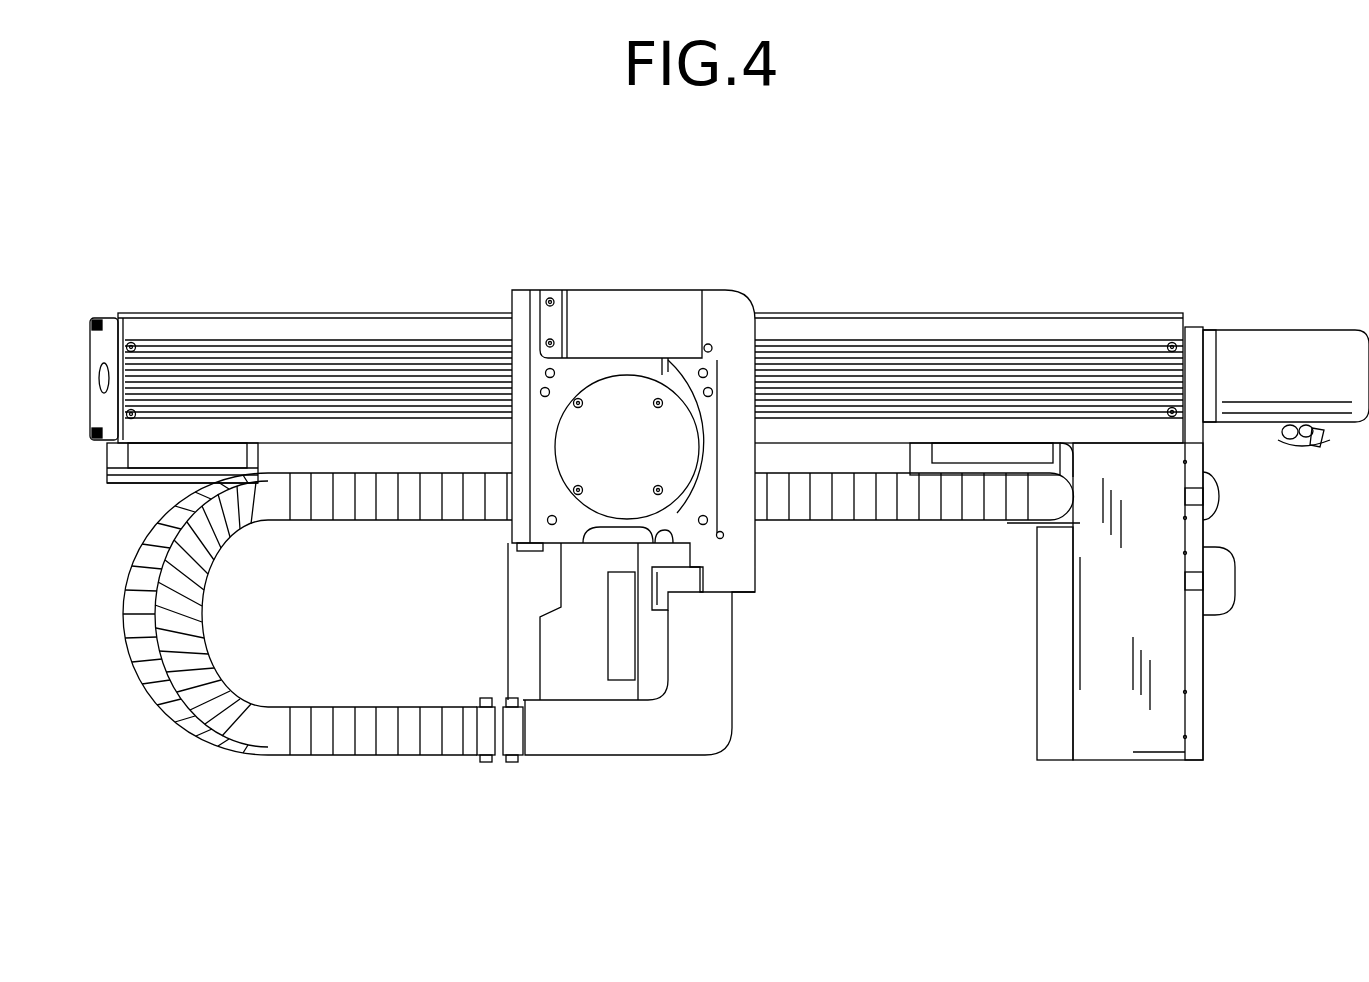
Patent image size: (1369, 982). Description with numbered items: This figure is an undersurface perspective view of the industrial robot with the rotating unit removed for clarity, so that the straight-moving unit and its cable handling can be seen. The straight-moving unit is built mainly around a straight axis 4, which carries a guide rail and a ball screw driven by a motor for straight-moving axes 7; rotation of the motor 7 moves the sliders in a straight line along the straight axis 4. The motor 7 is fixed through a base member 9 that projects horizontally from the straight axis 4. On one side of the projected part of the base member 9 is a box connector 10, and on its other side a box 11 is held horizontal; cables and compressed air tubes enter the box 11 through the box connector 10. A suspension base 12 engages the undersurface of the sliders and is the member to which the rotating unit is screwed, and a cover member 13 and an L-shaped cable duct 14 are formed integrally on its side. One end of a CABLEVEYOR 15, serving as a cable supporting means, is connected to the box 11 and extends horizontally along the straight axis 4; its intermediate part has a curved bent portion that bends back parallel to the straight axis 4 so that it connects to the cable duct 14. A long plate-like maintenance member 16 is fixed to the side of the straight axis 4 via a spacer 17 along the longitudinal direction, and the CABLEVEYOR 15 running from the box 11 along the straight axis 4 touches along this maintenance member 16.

The straight axis 4 is at (322, 313).
The motor for straight-moving axes 7 is at (1282, 330).
The base member 9 is at (1208, 660).
The box connector 10 is at (1220, 498).
The box 11 is at (1113, 762).
The suspension base 12 is at (628, 288).
The cover member 13 is at (505, 625).
The cable duct 14 is at (740, 657).
The CABLEVEYOR 15 is at (372, 748).
The maintenance member 16 is at (160, 483).
The spacer 17 is at (105, 462).